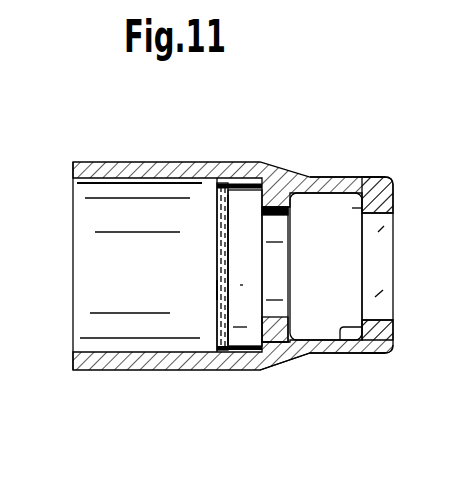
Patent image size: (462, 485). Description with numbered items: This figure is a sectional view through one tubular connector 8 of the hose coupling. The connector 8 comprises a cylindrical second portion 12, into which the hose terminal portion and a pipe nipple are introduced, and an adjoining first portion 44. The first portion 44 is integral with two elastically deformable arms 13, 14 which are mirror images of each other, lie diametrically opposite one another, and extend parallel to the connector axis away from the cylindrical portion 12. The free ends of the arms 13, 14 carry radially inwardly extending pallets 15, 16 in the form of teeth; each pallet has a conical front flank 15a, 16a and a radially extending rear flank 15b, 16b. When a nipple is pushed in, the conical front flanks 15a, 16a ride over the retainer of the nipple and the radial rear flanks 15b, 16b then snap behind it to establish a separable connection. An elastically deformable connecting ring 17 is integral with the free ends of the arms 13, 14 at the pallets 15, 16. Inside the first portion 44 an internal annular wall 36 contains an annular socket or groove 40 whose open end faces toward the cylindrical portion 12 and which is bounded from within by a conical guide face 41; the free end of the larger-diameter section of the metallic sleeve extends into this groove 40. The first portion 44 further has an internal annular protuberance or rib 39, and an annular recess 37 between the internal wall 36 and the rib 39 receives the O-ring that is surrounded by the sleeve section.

The tubular connector 8 is at (182, 150).
The cylindrical second portion 12 is at (123, 160).
The elongated extension or arm 13 is at (345, 177).
The elongated extension or arm 14 is at (351, 355).
The pallet 15 is at (394, 178).
The conical front flank 15a is at (381, 205).
The radially extending rear flank 15b is at (352, 208).
The pallet 16 is at (389, 357).
The conical front flank 16a is at (379, 324).
The radially extending rear flank 16b is at (333, 355).
The connecting ring 17 is at (376, 252).
The internal annular wall 36 is at (278, 215).
The annular recess 37 is at (245, 186).
The internal annular protuberance or rib 39 is at (217, 287).
The annular socket or groove 40 is at (287, 358).
The conical guide face 41 is at (258, 191).
The first portion 44 is at (283, 170).